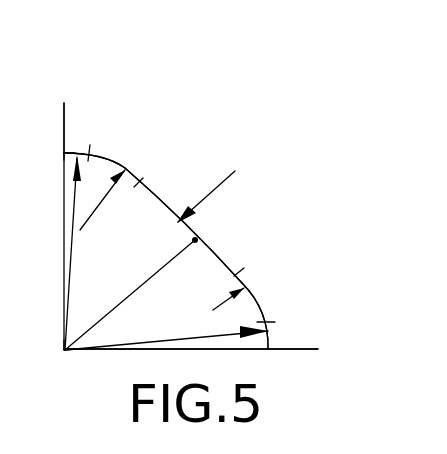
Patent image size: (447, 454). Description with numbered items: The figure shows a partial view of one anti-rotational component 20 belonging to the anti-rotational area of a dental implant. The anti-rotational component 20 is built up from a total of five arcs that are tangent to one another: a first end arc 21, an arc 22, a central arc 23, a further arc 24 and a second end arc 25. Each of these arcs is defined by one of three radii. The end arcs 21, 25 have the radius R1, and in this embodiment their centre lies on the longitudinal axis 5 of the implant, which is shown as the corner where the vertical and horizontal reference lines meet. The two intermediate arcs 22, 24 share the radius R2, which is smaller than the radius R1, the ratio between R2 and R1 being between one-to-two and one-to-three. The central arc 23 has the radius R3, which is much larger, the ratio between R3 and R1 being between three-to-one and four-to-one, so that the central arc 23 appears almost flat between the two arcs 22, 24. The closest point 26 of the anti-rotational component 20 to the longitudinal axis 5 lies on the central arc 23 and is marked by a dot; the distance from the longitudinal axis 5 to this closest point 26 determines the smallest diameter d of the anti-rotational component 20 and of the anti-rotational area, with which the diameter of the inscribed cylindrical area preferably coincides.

The anti-rotational component 20 is at (283, 147).
The end arc 21 is at (74, 153).
The arc 22 is at (108, 157).
The central arc 23 is at (160, 198).
The arc 24 is at (252, 292).
The end arc 25 is at (270, 343).
The closest point 26 is at (197, 239).
The longitudinal axis 5 is at (65, 350).
The radius of the end arcs R1 is at (166, 252).
The radius of the arcs R2 is at (162, 240).
The radius of the central arc R3 is at (221, 191).
The smallest diameter d is at (132, 293).